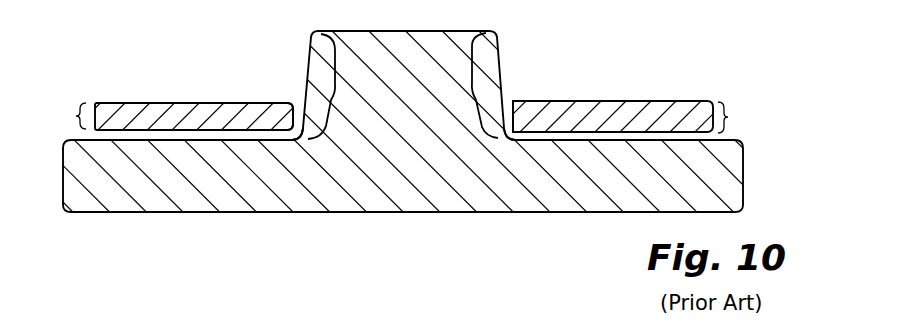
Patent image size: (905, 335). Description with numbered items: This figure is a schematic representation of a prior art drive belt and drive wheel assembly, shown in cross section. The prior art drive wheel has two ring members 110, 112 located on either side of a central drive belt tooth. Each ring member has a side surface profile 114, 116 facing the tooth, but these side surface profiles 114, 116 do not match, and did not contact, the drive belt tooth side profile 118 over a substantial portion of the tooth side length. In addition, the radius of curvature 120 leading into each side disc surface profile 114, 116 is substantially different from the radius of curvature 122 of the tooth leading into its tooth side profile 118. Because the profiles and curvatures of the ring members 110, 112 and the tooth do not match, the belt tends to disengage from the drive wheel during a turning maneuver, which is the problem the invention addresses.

The ring member 110 is at (162, 102).
The ring member 112 is at (657, 100).
The side surface profile 114 is at (57, 116).
The side surface profile 116 is at (747, 117).
The drive belt tooth side profile 118 is at (471, 90).
The radius of curvature 120 is at (277, 123).
The radius of curvature 122 is at (307, 142).